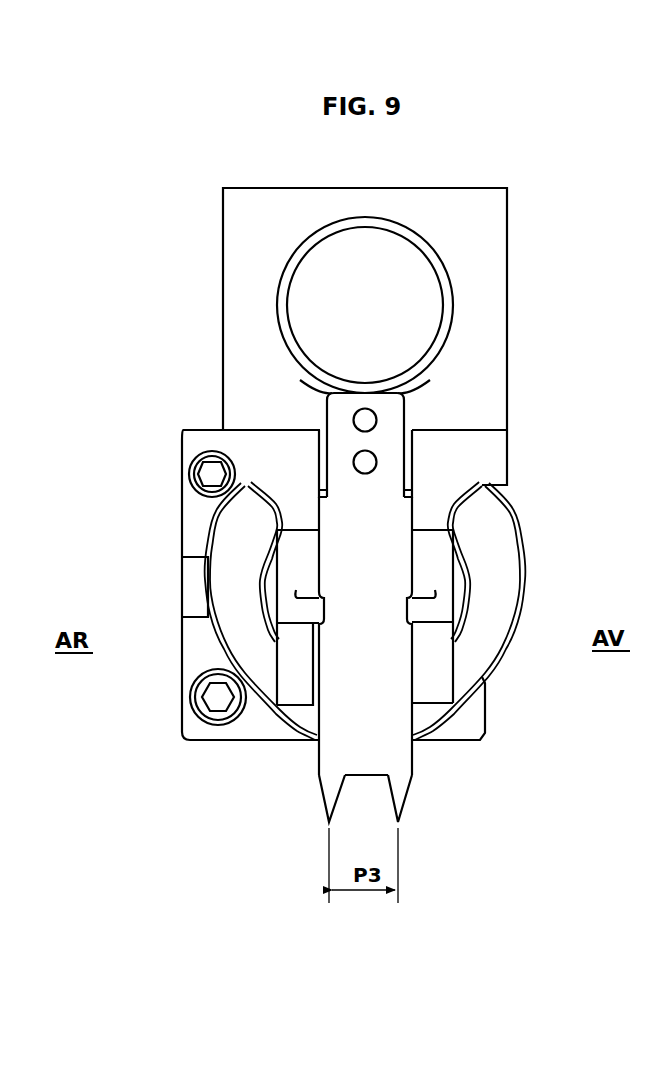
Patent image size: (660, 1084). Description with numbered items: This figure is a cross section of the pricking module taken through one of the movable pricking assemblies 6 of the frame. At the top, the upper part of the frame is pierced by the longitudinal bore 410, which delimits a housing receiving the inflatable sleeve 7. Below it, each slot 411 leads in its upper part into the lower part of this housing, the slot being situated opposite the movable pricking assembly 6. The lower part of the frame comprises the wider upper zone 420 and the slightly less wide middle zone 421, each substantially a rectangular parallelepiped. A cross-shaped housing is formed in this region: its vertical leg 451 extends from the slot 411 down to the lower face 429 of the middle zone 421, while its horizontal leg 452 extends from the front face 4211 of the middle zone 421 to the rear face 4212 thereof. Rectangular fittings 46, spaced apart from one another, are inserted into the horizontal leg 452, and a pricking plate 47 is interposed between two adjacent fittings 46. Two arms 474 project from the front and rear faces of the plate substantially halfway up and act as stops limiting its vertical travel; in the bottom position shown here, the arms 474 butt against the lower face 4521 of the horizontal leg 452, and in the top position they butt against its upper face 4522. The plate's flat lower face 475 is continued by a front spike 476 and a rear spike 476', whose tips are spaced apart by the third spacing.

The movable pricking assembly 6 is at (205, 797).
The inflatable sleeve 7 is at (316, 296).
The longitudinal bore 410 is at (368, 227).
The slot 411 is at (405, 393).
The upper zone 420 is at (492, 459).
The middle zone 421 is at (432, 678).
The front face 4211 is at (420, 655).
The rear face 4212 is at (272, 655).
The lower face 429 is at (428, 710).
The rectangular fitting 46 is at (432, 568).
The pricking plate 47 is at (378, 693).
The vertical leg 451 is at (325, 466).
The horizontal leg 452 is at (300, 615).
The lower face of the horizontal leg 4521 is at (445, 616).
The upper face of the horizontal leg 4522 is at (292, 535).
The arm 474 is at (293, 603).
The lower face 475 is at (366, 780).
The front spike 476 is at (437, 798).
The rear spike 476' is at (292, 798).